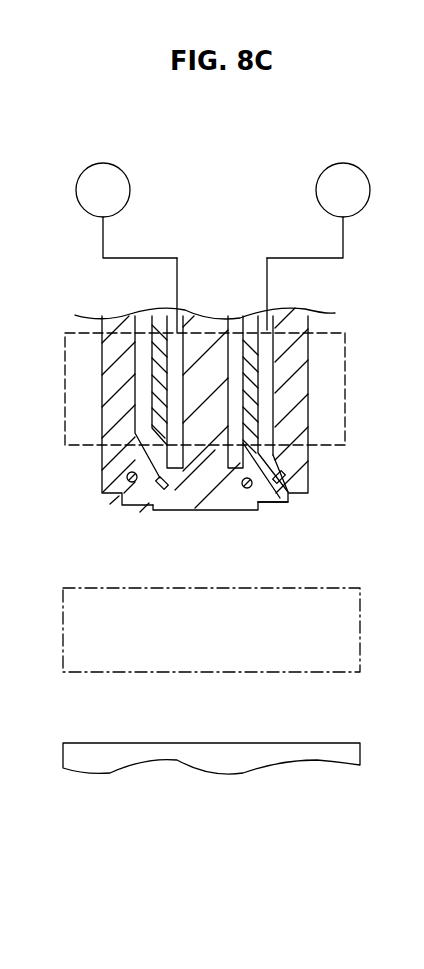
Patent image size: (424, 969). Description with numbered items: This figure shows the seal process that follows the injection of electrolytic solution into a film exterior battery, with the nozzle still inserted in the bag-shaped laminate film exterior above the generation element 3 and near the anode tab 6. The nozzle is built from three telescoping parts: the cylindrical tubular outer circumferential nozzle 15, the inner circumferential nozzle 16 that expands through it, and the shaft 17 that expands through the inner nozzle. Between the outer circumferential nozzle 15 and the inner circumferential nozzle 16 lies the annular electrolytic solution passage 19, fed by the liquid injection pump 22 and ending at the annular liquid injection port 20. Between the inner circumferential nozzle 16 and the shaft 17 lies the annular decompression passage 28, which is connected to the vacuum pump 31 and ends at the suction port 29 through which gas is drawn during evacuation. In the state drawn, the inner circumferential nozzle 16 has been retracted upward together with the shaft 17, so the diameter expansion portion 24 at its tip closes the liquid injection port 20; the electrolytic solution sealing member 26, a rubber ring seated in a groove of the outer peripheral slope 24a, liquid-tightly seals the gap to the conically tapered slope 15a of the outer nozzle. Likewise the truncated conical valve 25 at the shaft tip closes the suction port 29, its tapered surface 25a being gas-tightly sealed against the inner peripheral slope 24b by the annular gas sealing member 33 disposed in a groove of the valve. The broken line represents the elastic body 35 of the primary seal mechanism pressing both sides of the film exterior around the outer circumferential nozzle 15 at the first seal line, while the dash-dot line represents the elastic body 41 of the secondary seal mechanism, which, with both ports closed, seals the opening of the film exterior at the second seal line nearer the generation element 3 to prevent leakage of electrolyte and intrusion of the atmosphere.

The generation element 3 is at (95, 760).
The anode tab 6 is at (9, 313).
The outer circumferential nozzle 15 is at (108, 452).
The slope 15a is at (283, 447).
The inner circumferential nozzle 16 is at (158, 367).
The shaft 17 is at (208, 373).
The electrolytic solution passage 19 is at (148, 322).
The liquid injection port 20 is at (119, 496).
The liquid injection pump 22 is at (343, 170).
The diameter expansion portion 24 is at (290, 497).
The outer peripheral slope 24a is at (288, 480).
The inner peripheral slope 24b is at (247, 490).
The valve 25 is at (205, 490).
The tapered surface 25a is at (262, 505).
The electrolytic solution sealing member 26 is at (123, 475).
The decompression passage 28 is at (268, 393).
The suction port 29 is at (149, 503).
The vacuum pump 31 is at (105, 170).
The gas sealing member 33 is at (170, 492).
The elastic body 35 is at (347, 342).
The elastic body 41 is at (287, 672).